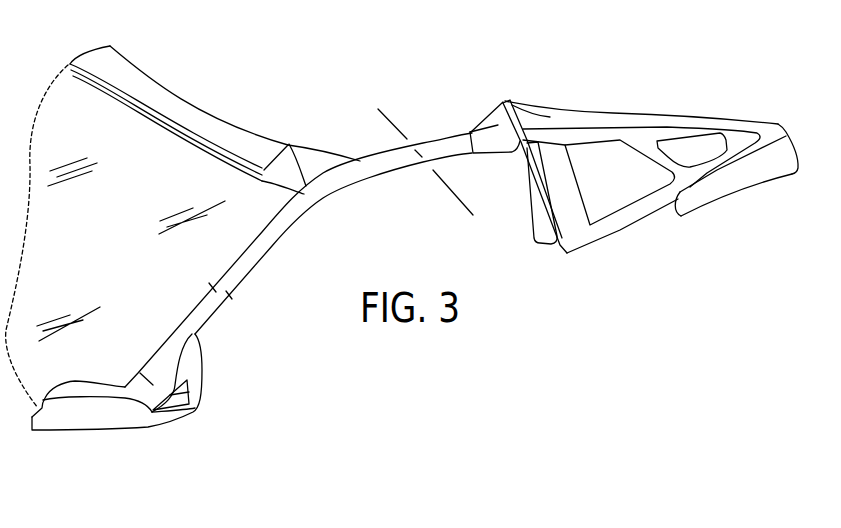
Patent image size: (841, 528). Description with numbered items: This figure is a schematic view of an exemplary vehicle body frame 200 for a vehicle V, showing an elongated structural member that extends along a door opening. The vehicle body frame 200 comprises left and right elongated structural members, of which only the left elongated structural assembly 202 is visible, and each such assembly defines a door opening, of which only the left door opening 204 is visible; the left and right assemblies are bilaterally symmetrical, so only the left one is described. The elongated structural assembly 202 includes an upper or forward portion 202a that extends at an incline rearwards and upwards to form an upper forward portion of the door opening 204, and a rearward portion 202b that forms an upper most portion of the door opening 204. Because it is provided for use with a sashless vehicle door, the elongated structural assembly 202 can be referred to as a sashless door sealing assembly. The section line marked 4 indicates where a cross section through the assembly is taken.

The vehicle body frame 200 is at (647, 87).
The elongated structural assembly 202 is at (446, 115).
The forward portion 202a is at (243, 273).
The rearward portion 202b is at (452, 157).
The door opening 204 is at (327, 187).
The section line 4- 4 is at (378, 117).
The vehicle V is at (98, 439).